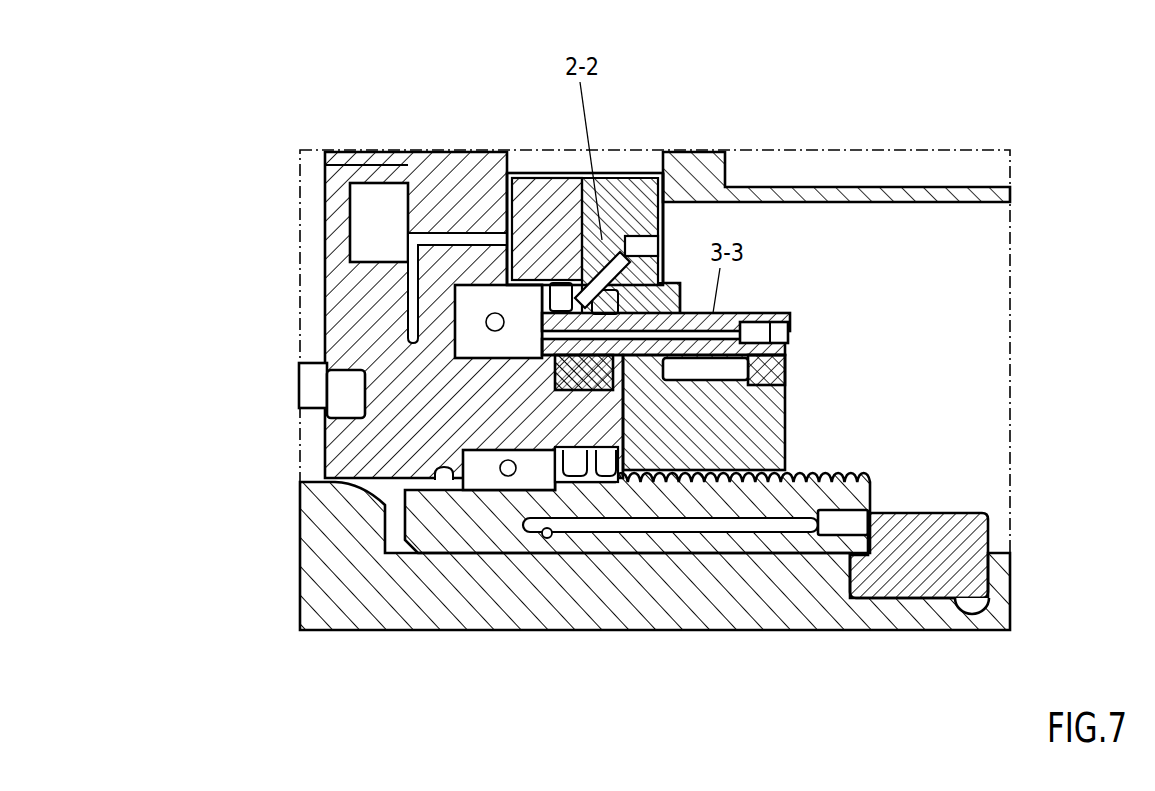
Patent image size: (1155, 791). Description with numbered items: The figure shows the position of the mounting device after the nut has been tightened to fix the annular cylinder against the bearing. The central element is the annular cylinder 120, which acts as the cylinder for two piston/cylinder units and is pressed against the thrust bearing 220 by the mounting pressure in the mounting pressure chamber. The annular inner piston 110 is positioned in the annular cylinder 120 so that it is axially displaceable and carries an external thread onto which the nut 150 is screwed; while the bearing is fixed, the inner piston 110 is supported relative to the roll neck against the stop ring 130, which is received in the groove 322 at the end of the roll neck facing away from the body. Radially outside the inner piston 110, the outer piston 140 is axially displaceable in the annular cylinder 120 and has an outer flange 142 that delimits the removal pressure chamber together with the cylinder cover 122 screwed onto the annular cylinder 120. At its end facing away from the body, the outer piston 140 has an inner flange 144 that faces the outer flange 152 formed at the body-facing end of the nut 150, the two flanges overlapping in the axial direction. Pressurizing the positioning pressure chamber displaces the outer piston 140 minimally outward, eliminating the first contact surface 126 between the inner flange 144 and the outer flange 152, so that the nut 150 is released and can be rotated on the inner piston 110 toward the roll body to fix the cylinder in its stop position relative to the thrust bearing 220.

The inner piston 110 is at (696, 466).
The annular cylinder 120 is at (537, 192).
The cylinder cover 122 is at (640, 210).
The first contact surface 126 is at (676, 371).
The stop ring 130 is at (967, 513).
The outer piston 140 is at (777, 314).
The outer flange 142 is at (532, 305).
The inner flange 144 is at (790, 367).
The nut 150 is at (785, 417).
The outer flange 152 is at (640, 362).
The thrust bearing 220 is at (300, 441).
The groove 322 is at (907, 598).